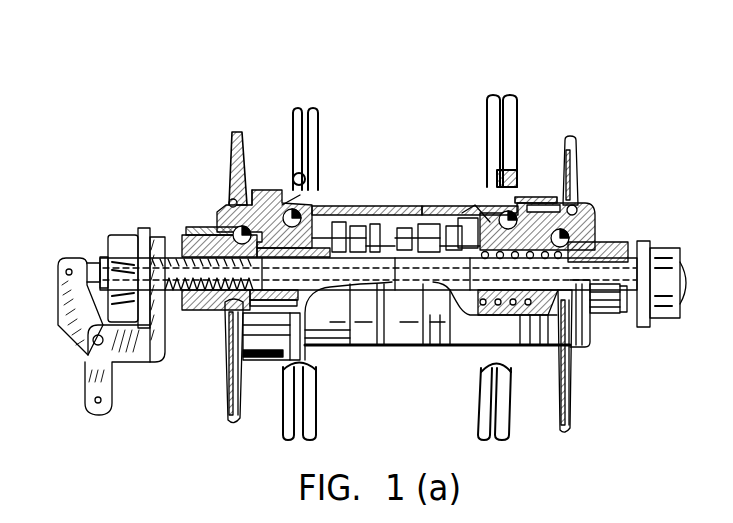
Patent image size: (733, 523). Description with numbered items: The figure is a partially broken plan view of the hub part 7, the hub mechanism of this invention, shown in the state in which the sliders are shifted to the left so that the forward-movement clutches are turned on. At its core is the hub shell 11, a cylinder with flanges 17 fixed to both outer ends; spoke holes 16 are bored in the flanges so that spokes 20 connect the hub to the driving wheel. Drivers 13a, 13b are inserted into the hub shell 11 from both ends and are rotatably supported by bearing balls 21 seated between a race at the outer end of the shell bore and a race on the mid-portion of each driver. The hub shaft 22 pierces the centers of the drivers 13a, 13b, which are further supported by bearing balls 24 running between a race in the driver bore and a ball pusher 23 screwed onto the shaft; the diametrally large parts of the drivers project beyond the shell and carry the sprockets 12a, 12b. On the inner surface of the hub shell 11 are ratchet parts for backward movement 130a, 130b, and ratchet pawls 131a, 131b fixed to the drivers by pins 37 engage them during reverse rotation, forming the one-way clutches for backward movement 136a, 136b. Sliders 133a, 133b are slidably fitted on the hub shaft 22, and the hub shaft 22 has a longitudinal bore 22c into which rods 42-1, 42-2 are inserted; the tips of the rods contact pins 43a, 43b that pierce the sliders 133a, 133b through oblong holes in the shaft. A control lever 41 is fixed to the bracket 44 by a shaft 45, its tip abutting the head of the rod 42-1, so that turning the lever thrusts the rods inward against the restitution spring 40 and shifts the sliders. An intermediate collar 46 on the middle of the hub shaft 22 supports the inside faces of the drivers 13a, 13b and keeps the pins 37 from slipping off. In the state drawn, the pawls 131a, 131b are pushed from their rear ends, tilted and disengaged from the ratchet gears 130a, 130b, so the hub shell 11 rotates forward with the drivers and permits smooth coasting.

The hub part 7 is at (589, 359).
The hub shell 11 is at (467, 348).
The sprocket 12a is at (224, 403).
The sprocket 12b is at (578, 145).
The driver 13a is at (213, 230).
The driver 13b is at (590, 200).
The spoke hole 16 is at (293, 200).
The flange 17 is at (518, 138).
The spoke 20 is at (314, 112).
The bearing ball 21 is at (266, 200).
The hub shaft 22 is at (648, 268).
The longitudinal bore 22c is at (168, 232).
The ball pusher 23 is at (176, 248).
The bearing ball 24 is at (190, 228).
The pin 37 is at (318, 205).
The restitution spring 40 is at (573, 383).
The control lever 41 is at (92, 401).
The rod 42-1 is at (103, 262).
The rod 42-2 is at (327, 344).
The pin 43a is at (221, 340).
The pin 43b is at (425, 350).
The bracket 44 is at (133, 362).
The shaft 45 is at (92, 346).
The intermediate collar 46 is at (377, 350).
The ratchet part for backward movement 130a is at (352, 222).
The ratchet part for backward movement 130b is at (433, 224).
The ratchet pawl 131a is at (375, 224).
The ratchet pawl 131b is at (450, 226).
The slider 133a is at (240, 306).
The slider 133b is at (502, 368).
The one-way clutch for backward movement 136a is at (405, 128).
The one-way clutch for backward movement 136b is at (478, 48).